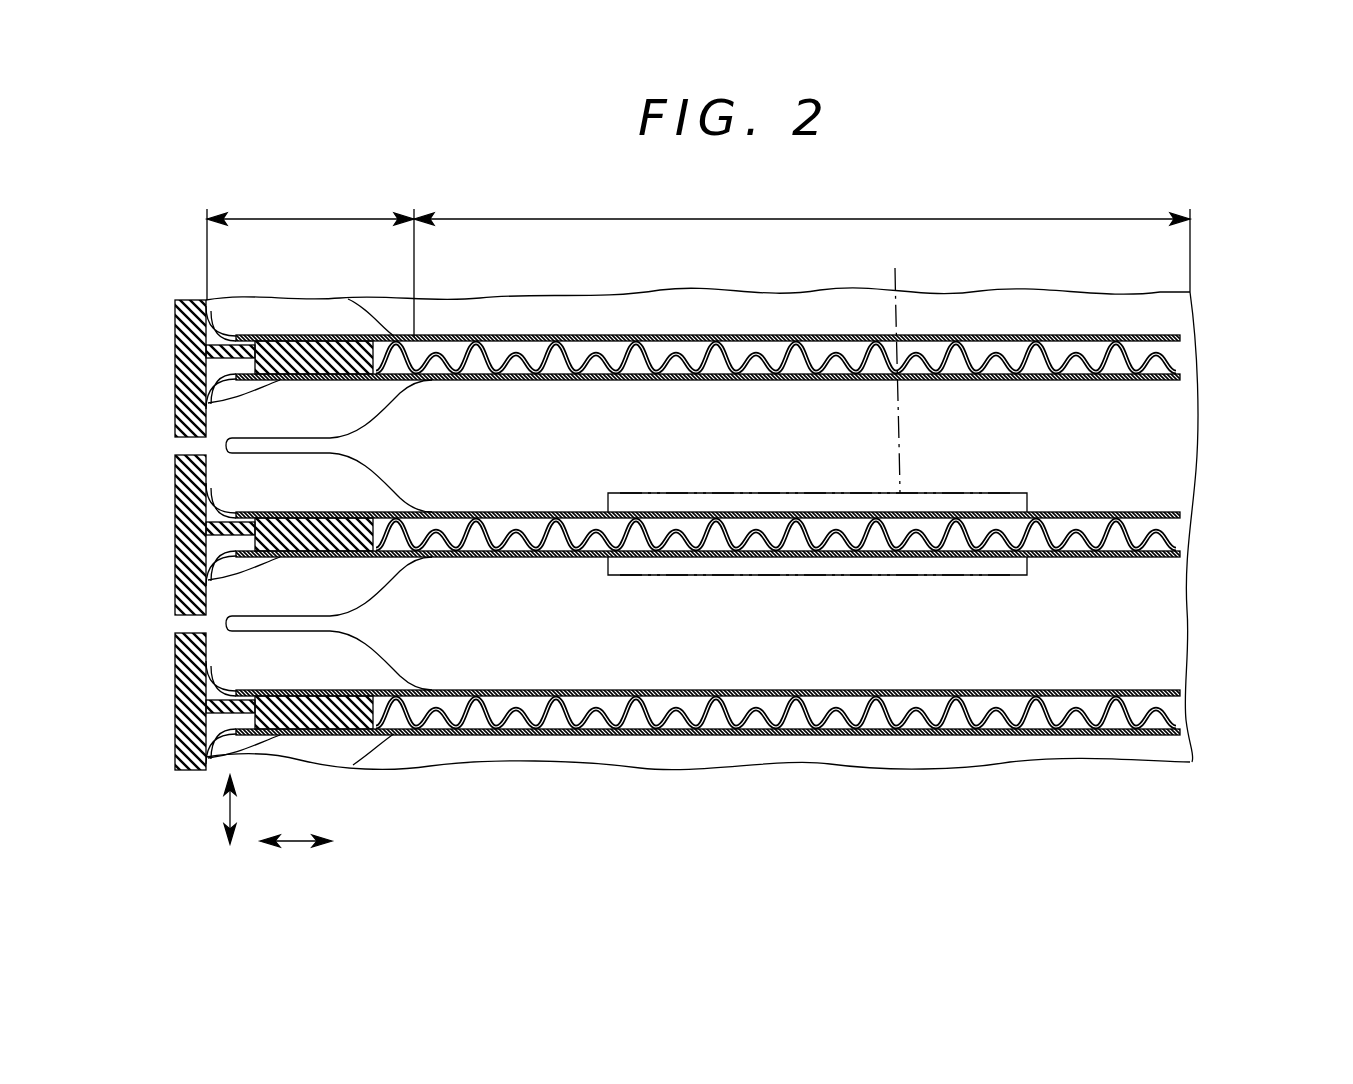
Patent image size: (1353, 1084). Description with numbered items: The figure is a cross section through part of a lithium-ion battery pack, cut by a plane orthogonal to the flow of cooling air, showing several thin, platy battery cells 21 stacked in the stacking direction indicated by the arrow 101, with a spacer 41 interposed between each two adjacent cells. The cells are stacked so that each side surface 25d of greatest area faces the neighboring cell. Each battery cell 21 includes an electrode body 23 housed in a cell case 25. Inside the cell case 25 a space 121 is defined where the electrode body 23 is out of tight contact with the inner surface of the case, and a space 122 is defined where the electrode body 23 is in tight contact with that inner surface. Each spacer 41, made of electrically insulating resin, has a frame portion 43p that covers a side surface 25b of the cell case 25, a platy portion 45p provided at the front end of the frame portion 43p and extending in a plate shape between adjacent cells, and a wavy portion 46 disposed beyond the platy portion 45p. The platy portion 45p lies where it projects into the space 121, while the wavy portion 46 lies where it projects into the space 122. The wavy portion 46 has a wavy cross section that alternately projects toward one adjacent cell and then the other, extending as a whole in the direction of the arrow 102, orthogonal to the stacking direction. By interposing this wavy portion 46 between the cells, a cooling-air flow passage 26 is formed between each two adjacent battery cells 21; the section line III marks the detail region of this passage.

The battery cell 21 is at (1160, 318).
The electrode body 23 is at (1165, 488).
The cell case 25 is at (763, 360).
The side surface 25b is at (175, 433).
The side surface 25d is at (662, 524).
The cooling-air flow passage 26 is at (735, 536).
The spacer 41 is at (174, 312).
The frame portion 43p is at (175, 345).
The platy portion 45p is at (175, 400).
The wavy portion 46 is at (791, 352).
The arrow 101 is at (228, 812).
The arrow 102 is at (296, 844).
The space 121 is at (313, 218).
The space 122 is at (801, 218).
The section III is at (895, 364).